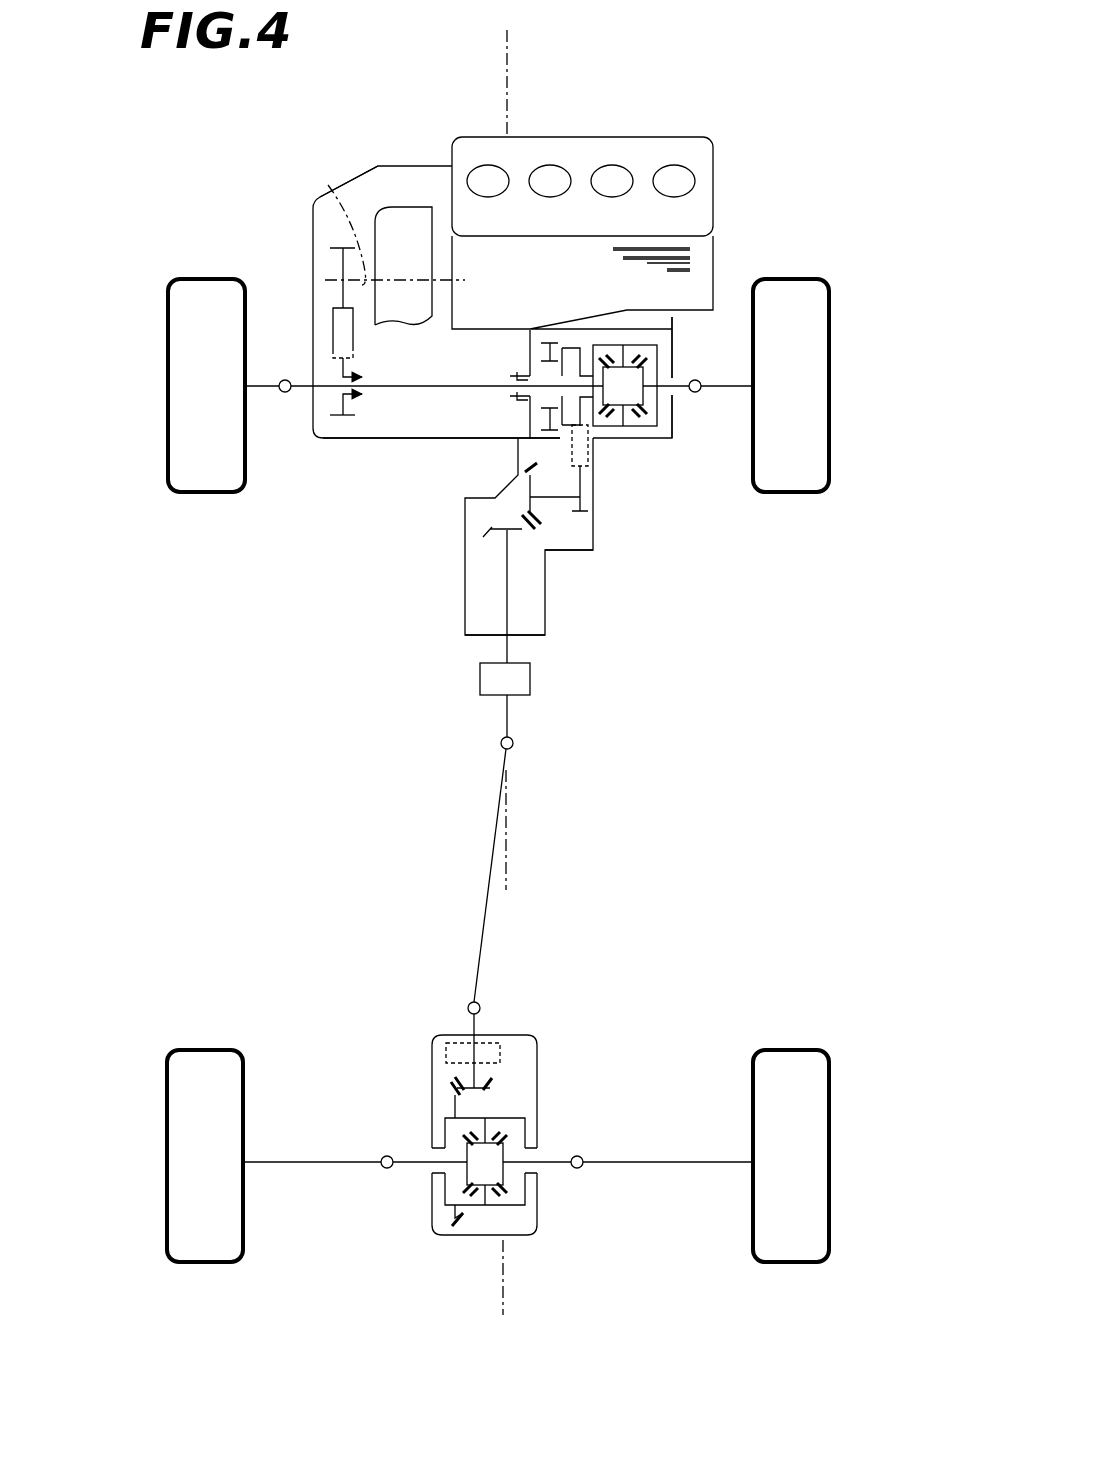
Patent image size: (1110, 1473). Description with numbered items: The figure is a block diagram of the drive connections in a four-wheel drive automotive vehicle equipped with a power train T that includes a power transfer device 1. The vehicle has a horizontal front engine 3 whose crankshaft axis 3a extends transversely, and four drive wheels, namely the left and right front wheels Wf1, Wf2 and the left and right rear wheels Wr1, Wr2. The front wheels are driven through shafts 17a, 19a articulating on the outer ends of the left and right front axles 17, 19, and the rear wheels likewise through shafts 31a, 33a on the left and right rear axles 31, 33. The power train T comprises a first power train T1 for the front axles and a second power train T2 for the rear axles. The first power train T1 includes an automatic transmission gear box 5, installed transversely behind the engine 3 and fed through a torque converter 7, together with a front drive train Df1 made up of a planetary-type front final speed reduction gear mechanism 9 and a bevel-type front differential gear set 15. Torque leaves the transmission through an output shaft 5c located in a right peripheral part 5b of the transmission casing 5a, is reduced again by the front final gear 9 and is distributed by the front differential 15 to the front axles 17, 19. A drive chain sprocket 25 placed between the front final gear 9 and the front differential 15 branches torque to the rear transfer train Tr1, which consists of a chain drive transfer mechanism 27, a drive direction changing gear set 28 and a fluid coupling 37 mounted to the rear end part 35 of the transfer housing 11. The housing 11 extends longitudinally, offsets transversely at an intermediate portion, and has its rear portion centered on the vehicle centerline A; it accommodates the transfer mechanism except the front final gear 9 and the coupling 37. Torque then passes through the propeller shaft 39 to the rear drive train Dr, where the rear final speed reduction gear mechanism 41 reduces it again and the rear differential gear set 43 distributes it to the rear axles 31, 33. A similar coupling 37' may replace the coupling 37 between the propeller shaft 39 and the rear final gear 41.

The power transfer device 1 is at (693, 595).
The front engine 3 is at (610, 158).
The crankshaft axis 3a is at (374, 221).
The automatic transmission gear box 5 is at (322, 352).
The transmission casing 5a is at (352, 440).
The right peripheral part 5b is at (530, 340).
The output shaft 5c is at (522, 375).
The torque converter 7 is at (412, 218).
The front final speed reduction gear mechanism 9 is at (563, 343).
The transfer housing 11 is at (668, 445).
The front differential gear set 15 is at (638, 442).
The left front axle 17 is at (428, 387).
The shaft 17a is at (268, 392).
The right front axle 19 is at (685, 380).
The shaft 19a is at (722, 400).
The drive chain sprocket 25 is at (578, 350).
The chain drive transfer mechanism 27 is at (588, 472).
The drive direction changing gear set 28 is at (470, 503).
The left rear axle 31 is at (395, 1168).
The shaft 31a is at (367, 1158).
The right rear axle 33 is at (553, 1160).
The shaft 33a is at (692, 1168).
The rear end part 35 is at (546, 635).
The fluid coupling 37 is at (553, 633).
The coupling 37' is at (426, 1011).
The propeller shaft 39 is at (493, 812).
The rear final speed reduction gear mechanism 41 is at (508, 1104).
The rear differential gear set 43 is at (513, 1214).
The longitudinal centerline A is at (508, 98).
The power train T is at (255, 188).
The first power train T1 is at (378, 165).
The second power train T2 is at (455, 633).
The rear transfer train Tr1 is at (556, 560).
The front drive train Df1 is at (680, 340).
The rear drive train Dr is at (522, 1028).
The left front wheel Wf1 is at (168, 343).
The right front wheel Wf2 is at (830, 318).
The left rear wheel Wr1 is at (165, 1112).
The right rear wheel Wr2 is at (830, 1120).